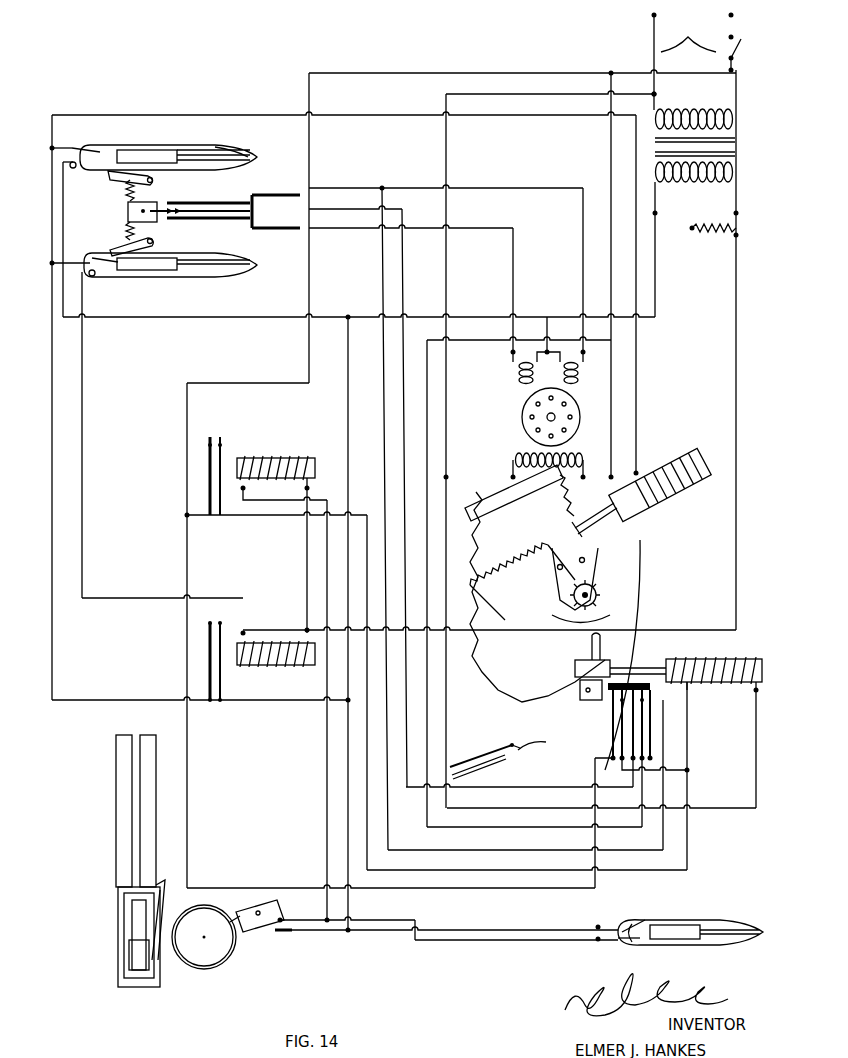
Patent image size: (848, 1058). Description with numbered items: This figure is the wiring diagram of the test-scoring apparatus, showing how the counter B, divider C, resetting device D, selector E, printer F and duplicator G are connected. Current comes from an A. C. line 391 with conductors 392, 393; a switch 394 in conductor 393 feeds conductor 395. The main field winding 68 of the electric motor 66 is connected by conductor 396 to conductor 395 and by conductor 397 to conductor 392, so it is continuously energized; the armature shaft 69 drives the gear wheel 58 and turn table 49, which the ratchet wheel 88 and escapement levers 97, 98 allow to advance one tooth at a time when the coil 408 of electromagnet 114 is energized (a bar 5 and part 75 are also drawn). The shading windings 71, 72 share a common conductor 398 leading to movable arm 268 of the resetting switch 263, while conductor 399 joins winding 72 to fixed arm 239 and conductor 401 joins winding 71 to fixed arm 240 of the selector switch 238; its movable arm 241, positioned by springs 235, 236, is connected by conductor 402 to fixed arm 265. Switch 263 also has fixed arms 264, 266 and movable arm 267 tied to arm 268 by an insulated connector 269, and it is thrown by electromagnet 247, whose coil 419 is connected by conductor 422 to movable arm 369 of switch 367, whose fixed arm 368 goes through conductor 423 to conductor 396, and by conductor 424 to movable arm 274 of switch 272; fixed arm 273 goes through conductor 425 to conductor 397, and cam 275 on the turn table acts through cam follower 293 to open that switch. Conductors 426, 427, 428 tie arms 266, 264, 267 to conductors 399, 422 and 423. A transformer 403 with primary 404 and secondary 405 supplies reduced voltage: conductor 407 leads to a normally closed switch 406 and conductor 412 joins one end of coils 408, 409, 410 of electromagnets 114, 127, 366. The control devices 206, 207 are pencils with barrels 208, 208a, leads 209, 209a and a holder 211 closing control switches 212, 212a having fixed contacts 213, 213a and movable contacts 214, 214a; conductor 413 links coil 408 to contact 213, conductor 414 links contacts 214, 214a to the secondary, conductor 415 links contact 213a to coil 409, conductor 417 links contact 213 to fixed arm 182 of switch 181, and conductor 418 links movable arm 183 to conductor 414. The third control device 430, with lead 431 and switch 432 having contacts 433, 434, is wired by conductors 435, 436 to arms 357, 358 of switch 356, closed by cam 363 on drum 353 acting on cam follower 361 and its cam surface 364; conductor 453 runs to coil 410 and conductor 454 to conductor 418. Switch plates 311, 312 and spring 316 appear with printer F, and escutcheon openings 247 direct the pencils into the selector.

The bar 5 is at (514, 499).
The turn table 49 is at (644, 548).
The gear wheel 58 is at (588, 490).
The electric motor 66 is at (580, 438).
The field winding 68 is at (516, 461).
The armature shaft 69 is at (546, 414).
The shading winding 71 is at (516, 375).
The shading winding 72 is at (580, 376).
The link 75 is at (615, 585).
The ratchet wheel 88 is at (600, 605).
The lever 97 is at (600, 570).
The lever 98 is at (556, 590).
The electromagnet 114 is at (692, 510).
The electromagnet 127 is at (260, 632).
The switch 181 is at (215, 653).
The contact arm 182 is at (206, 634).
The contact arm 183 is at (220, 674).
The control device 206 is at (165, 143).
The control device 207 is at (205, 278).
The barrel 208 is at (147, 150).
The barrel 208a is at (150, 270).
The lead 209 is at (250, 156).
The lead 209a is at (250, 262).
The holder 211 is at (195, 143).
The control switch 212 is at (65, 145).
The control switch 212a is at (88, 268).
The fixed contact 213 is at (95, 150).
The fixed contact 213a is at (105, 260).
The movable contact 214 is at (110, 175).
The movable contact 214a is at (112, 270).
The compression coil spring 235 is at (140, 240).
The compression coil spring 236 is at (140, 194).
The switch 238 is at (300, 195).
The fixed spring contact arm 239 is at (205, 202).
The fixed spring contact arm 240 is at (215, 218).
The movable contact spring arm 241 is at (240, 203).
The electromagnet 247 is at (718, 690).
The resetting switch 263 is at (615, 745).
The fixed contact arm 264 is at (625, 722).
The fixed contact arm 265 is at (640, 735).
The fixed contact arm 266 is at (664, 725).
The movable contact arm 267 is at (620, 735).
The movable contact arm 268 is at (640, 688).
The insulated connector 269 is at (640, 672).
The switch 272 is at (462, 760).
The fixed contact arm 273 is at (510, 747).
The movable contact arm 274 is at (490, 764).
The cam 275 is at (526, 735).
The cam follower 293 is at (535, 748).
The switch plate 311 is at (122, 800).
The switch plate 312 is at (138, 830).
The spring 316 is at (128, 920).
The drum 353 is at (204, 966).
The switch 356 is at (330, 934).
The fixed contact arm 357 is at (290, 934).
The movable contact arm 358 is at (303, 918).
The cam follower 361 is at (262, 900).
The cam 363 is at (220, 895).
The cam surface 364 is at (235, 912).
The electromagnet 366 is at (292, 456).
The switch 367 is at (213, 472).
The switch contact arm 368 is at (205, 455).
The switch contact arm 369 is at (218, 492).
The A. C. line 391 is at (688, 31).
The conductor 392 is at (654, 40).
The conductor 393 is at (734, 21).
The switch 394 is at (743, 48).
The conductor 395 is at (738, 70).
The conductor 396 is at (609, 72).
The conductor 397 is at (447, 172).
The common conductor 398 is at (468, 340).
The conductor 399 is at (552, 188).
The conductor 401 is at (514, 250).
The conductor 402 is at (360, 209).
The transformer 403 is at (740, 146).
The primary 404 is at (698, 110).
The secondary 405 is at (730, 177).
The normally closed switch 406 is at (738, 220).
The conductor 407 is at (732, 202).
The coil 408 is at (684, 463).
The coil 409 is at (282, 642).
The coil 410 is at (258, 456).
The conductor 412 is at (738, 350).
The conductor 413 is at (537, 115).
The conductor 414 is at (63, 203).
The conductor 415 is at (83, 558).
The conductor 417 is at (52, 391).
The conductor 418 is at (349, 420).
The coil 419 is at (718, 658).
The conductor 422 is at (280, 517).
The conductor 423 is at (187, 383).
The conductor 424 is at (746, 808).
The conductor 425 is at (448, 530).
The conductor 426 is at (668, 848).
The conductor 427 is at (680, 775).
The conductor 428 is at (598, 888).
The third control device 430 is at (684, 940).
The lead 431 is at (762, 932).
The switch 432 is at (630, 925).
The fixed contact 433 is at (640, 920).
The movable contact 434 is at (637, 945).
The conductor 435 is at (545, 933).
The conductor 436 is at (490, 943).
The conductor 453 is at (326, 776).
The conductor 454 is at (347, 826).
The counter B is at (490, 551).
The divider C is at (252, 605).
The resetting device D is at (700, 496).
The selector E is at (127, 209).
The printer F is at (128, 880).
The duplicator G is at (236, 440).